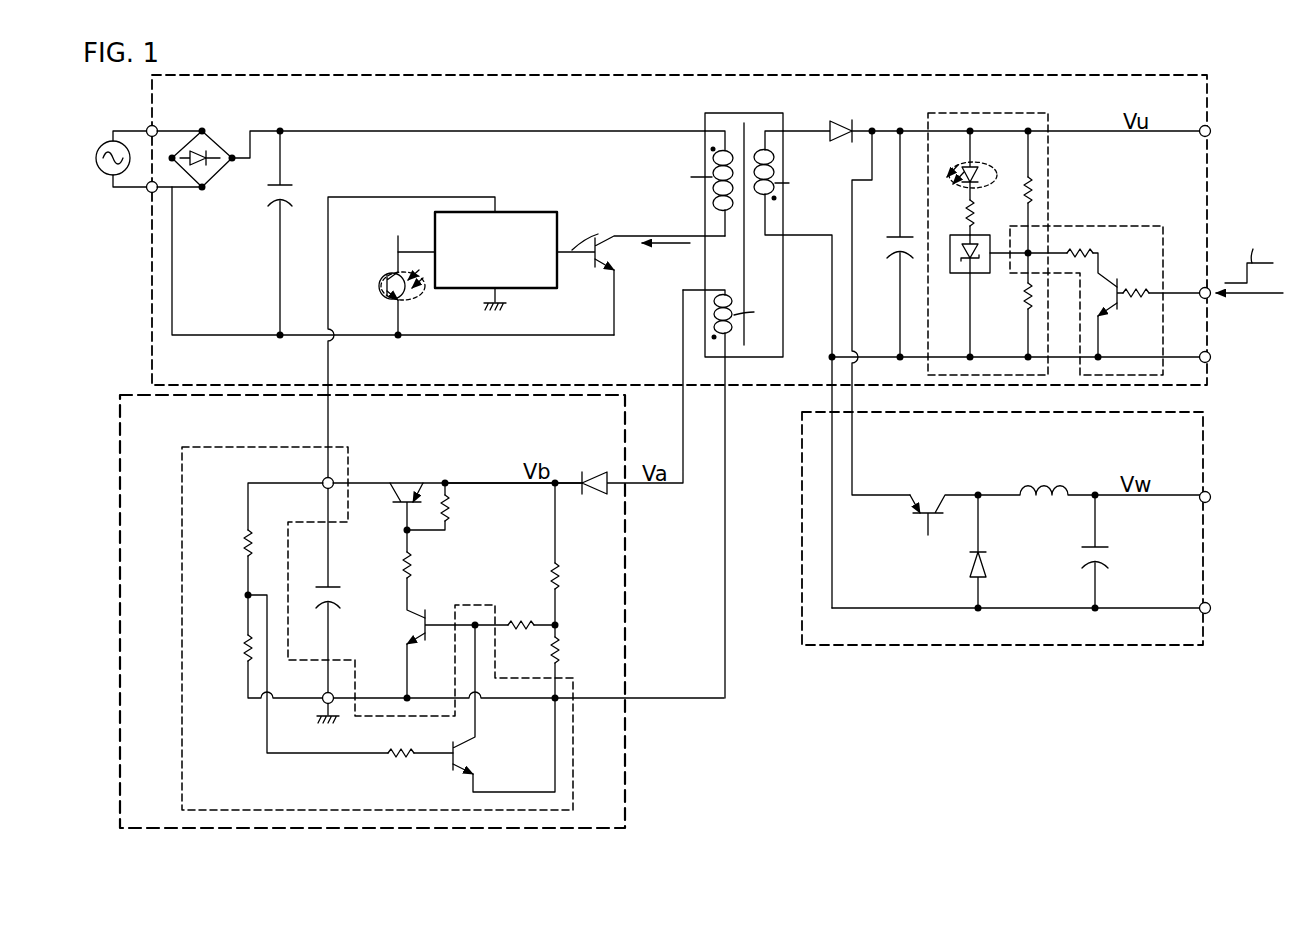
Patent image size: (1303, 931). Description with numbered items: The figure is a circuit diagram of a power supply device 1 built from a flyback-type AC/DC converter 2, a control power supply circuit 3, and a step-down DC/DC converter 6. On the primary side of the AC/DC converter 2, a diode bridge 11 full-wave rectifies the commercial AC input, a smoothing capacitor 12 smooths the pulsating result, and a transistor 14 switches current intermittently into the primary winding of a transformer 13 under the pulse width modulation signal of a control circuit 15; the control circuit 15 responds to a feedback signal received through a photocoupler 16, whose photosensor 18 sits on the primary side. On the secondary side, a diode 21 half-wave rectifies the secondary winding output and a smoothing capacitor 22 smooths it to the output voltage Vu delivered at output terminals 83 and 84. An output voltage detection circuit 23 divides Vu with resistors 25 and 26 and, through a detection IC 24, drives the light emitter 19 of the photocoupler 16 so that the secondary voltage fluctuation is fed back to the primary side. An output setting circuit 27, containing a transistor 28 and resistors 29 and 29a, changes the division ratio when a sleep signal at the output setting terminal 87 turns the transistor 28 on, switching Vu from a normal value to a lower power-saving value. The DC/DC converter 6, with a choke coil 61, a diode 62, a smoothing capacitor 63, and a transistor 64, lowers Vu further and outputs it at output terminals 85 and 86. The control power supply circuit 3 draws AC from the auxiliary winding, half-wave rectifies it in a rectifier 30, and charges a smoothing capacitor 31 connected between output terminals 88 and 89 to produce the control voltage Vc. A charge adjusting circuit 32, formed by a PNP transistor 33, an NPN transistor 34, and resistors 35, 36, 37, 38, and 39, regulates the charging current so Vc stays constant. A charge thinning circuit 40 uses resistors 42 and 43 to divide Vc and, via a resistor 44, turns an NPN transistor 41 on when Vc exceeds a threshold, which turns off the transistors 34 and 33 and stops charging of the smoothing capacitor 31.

The power supply device 1 is at (840, 708).
The AC/DC converter 2 is at (152, 250).
The control power supply circuit 3 is at (122, 454).
The DC/DC converter 6 is at (802, 449).
The diode bridge 11 is at (206, 134).
The smoothing capacitor 12 is at (285, 187).
The transformer 13 is at (702, 214).
The transistor 14 is at (606, 268).
The control circuit 15 is at (541, 212).
The photocoupler 16 is at (381, 277).
The photosensor 18 is at (390, 305).
The light emitter 19 is at (961, 194).
The diode 21 is at (838, 143).
The smoothing capacitor 22 is at (889, 236).
The output voltage detection circuit 23 is at (963, 113).
The detection IC 24 is at (967, 276).
The resistor 25 is at (1026, 200).
The resistor 26 is at (1026, 302).
The output setting circuit 27 is at (1078, 226).
The transistor 28 is at (1119, 306).
The resistor 29 is at (1086, 256).
The resistor 29a is at (1135, 290).
The rectifier 30 is at (598, 464).
The smoothing capacitor 31 is at (333, 588).
The charge adjusting circuit 32 is at (500, 572).
The PNP transistor 33 is at (400, 494).
The NPN transistor 34 is at (408, 616).
The resistor 35 is at (449, 510).
The resistor 36 is at (412, 569).
The resistor 37 is at (560, 568).
The resistor 38 is at (559, 658).
The resistor 39 is at (520, 623).
The charge thinning circuit 40 is at (181, 748).
The NPN transistor 41 is at (466, 748).
The resistor 42 is at (248, 535).
The resistor 43 is at (248, 653).
The resistor 44 is at (410, 753).
The choke coil 61 is at (1044, 488).
The diode 62 is at (988, 563).
The smoothing capacitor 63 is at (1103, 549).
The transistor 64 is at (938, 507).
The output terminal 83 is at (1201, 127).
The output terminal 84 is at (1202, 351).
The output terminal 85 is at (1200, 491).
The output terminal 86 is at (1200, 602).
The output setting terminal 87 is at (1200, 288).
The output terminal 88 is at (323, 488).
The output terminal 89 is at (321, 692).